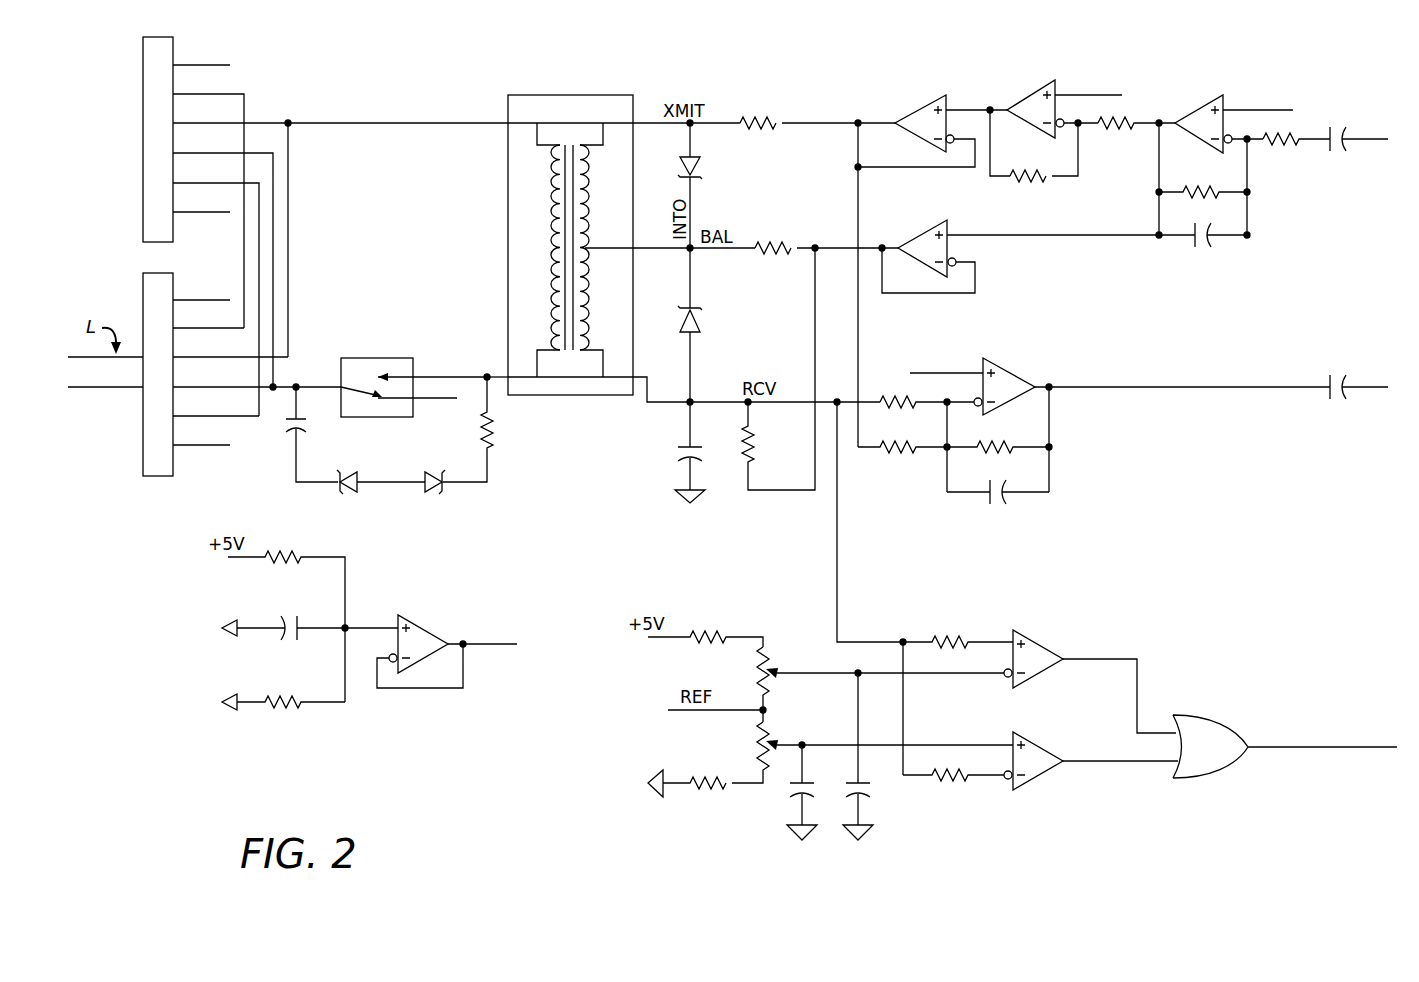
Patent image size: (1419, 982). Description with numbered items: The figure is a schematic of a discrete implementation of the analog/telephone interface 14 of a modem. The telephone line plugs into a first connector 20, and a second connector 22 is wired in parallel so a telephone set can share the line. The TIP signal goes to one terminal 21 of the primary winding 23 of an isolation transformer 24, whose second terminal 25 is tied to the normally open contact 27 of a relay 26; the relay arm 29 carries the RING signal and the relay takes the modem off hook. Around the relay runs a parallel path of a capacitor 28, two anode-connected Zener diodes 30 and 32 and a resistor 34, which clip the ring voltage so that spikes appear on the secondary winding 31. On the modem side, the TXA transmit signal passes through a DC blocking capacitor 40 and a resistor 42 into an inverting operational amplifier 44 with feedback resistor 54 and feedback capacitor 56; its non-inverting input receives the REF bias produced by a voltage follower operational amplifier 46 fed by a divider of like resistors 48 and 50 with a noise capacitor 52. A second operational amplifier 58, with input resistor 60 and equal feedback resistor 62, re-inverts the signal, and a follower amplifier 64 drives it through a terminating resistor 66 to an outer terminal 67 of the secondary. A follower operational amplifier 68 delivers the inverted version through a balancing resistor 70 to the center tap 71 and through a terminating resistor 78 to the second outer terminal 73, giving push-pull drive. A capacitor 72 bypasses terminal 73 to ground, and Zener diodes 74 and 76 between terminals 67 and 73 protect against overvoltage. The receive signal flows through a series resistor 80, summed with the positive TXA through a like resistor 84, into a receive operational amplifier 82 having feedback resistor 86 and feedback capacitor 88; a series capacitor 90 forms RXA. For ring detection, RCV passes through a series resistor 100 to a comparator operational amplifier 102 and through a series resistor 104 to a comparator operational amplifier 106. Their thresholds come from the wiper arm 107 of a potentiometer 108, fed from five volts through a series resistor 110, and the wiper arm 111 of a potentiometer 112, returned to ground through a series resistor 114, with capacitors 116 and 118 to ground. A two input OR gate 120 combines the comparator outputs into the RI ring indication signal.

The analog/telephone interface 14 is at (200, 770).
The first connector 20 is at (158, 476).
The second connector 22 is at (157, 37).
The terminal of the primary winding 21 is at (508, 122).
The primary winding 23 is at (548, 218).
The transformer 24 is at (579, 256).
The second terminal of the primary winding 25 is at (506, 376).
The relay 26 is at (368, 358).
The normally open contact 27 is at (418, 372).
The capacitor 28 is at (290, 430).
The arm of the relay 29 is at (345, 382).
The Zener diode 30 is at (350, 490).
The secondary winding 31 is at (590, 200).
The Zener diode 32 is at (436, 490).
The resistor 34 is at (484, 429).
The DC blocking capacitor 40 is at (1336, 150).
The resistor 42 is at (1268, 148).
The operational amplifier 44 is at (1196, 114).
The operational amplifier 46 is at (425, 633).
The resistor 48 is at (292, 557).
The resistor 50 is at (293, 702).
The capacitor 52 is at (299, 628).
The feedback resistor 54 is at (1208, 190).
The feedback capacitor 56 is at (1198, 246).
The second operational amplifier 58 is at (1036, 94).
The resistor 60 is at (1128, 128).
The feedback resistor 62 is at (1032, 180).
The amplifier 64 is at (914, 114).
The terminating resistor 66 is at (760, 120).
The outer terminal 67 is at (633, 123).
The operational amplifier 68 is at (919, 232).
The balancing resistor 70 is at (776, 245).
The center tap 71 is at (593, 255).
The capacitor 72 is at (678, 456).
The second outer terminal 73 is at (639, 384).
The Zener diode 74 is at (703, 324).
The Zener diode 76 is at (703, 166).
The terminating resistor 78 is at (755, 449).
The series resistor 80 is at (898, 396).
The receive operational amplifier 82 is at (1010, 373).
The resistor 84 is at (898, 462).
The feedback resistor 86 is at (997, 447).
The feedback capacitor 88 is at (1000, 502).
The series capacitor 90 is at (1328, 383).
The series resistor 100 is at (952, 628).
The operational amplifier 102 is at (1042, 642).
The series resistor 104 is at (952, 786).
The operational amplifier 106 is at (1040, 775).
The wiper arm 107 is at (773, 666).
The potentiometer 108 is at (758, 664).
The series resistor 110 is at (725, 628).
The wiper arm 111 is at (778, 740).
The potentiometer 112 is at (758, 744).
The series resistor 114 is at (718, 790).
The capacitor 116 is at (874, 794).
The capacitor 118 is at (786, 794).
The two input OR gate 120 is at (1232, 720).